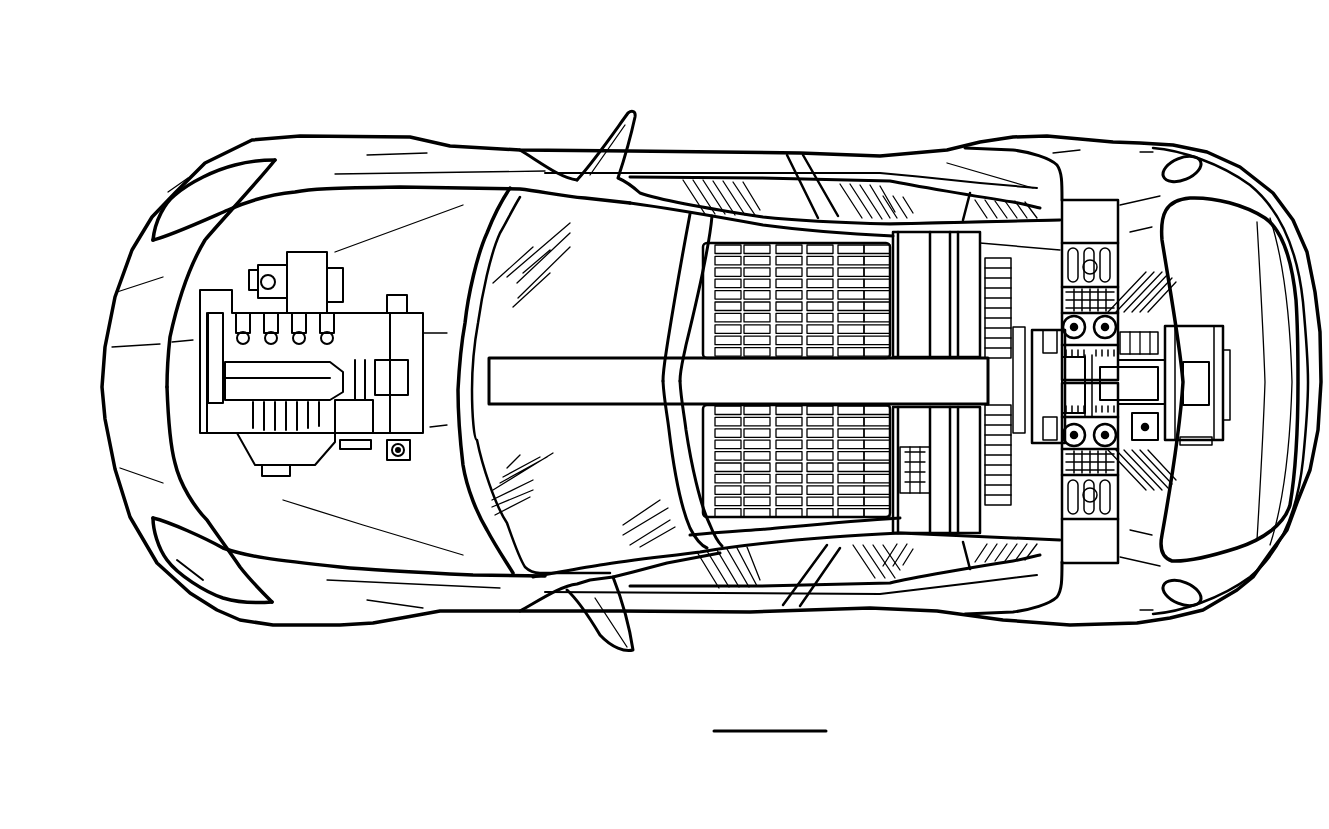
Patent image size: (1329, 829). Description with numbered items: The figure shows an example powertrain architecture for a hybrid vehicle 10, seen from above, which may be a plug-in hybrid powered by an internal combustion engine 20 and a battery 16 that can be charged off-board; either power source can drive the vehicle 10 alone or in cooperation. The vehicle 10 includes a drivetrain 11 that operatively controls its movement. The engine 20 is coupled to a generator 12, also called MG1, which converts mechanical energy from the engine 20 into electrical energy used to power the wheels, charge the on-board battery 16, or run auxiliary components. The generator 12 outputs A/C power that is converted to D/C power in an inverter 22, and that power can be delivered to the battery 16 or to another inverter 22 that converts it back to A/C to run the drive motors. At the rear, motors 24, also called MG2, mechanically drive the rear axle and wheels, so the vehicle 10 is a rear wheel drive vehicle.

The hybrid vehicle 10 is at (683, 95).
The drivetrain 11 is at (188, 365).
The generator 12 is at (417, 439).
The battery 16 is at (562, 380).
The internal combustion engine 20 is at (310, 235).
The inverter 22 is at (1088, 214).
The motor 24 is at (1255, 540).